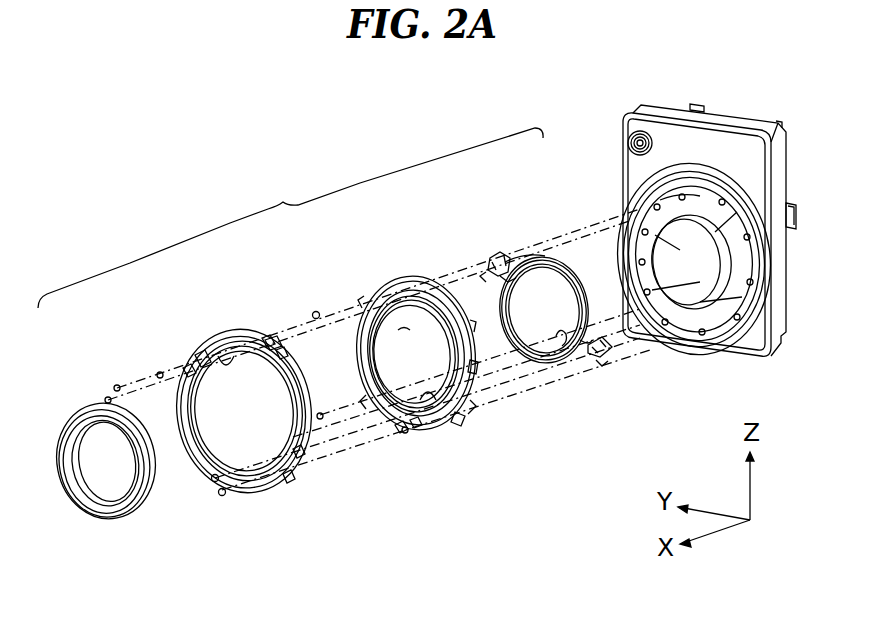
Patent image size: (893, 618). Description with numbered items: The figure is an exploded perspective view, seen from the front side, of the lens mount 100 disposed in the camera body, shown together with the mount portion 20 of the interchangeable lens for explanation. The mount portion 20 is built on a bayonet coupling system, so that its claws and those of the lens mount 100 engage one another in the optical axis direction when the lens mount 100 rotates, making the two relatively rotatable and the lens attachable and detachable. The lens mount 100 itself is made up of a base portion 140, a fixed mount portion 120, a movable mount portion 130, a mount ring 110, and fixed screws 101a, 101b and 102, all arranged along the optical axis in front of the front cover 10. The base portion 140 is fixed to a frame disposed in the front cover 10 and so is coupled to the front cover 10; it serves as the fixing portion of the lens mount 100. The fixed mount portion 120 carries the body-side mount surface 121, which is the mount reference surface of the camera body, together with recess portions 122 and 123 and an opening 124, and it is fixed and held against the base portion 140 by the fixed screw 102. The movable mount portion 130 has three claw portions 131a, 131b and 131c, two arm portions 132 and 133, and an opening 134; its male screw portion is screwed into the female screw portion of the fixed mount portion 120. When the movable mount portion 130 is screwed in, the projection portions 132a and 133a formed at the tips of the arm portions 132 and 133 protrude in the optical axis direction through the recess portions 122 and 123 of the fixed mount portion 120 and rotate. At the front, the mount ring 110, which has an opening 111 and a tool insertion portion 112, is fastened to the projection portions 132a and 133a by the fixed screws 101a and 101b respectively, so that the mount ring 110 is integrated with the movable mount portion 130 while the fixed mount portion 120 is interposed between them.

The front cover 10 is at (624, 162).
The mount portion 20 is at (66, 418).
The lens mount 100 is at (290, 218).
The fixed screw 101a is at (108, 398).
The fixed screw 101b is at (222, 492).
The fixed screw 102 is at (400, 432).
The mount ring 110 is at (197, 357).
The opening 111 is at (212, 357).
The tool insertion portion 112 is at (277, 347).
The fixed mount portion 120 is at (392, 293).
The body-side mount surface 121 is at (457, 420).
The recess portion 122 is at (313, 312).
The recess portion 123 is at (473, 368).
The opening 124 is at (430, 396).
The movable mount portion 130 is at (396, 298).
The claw portion 131a is at (600, 335).
The claw portion 131b is at (535, 360).
The claw portion 131c is at (525, 256).
The arm portion 132 is at (498, 251).
The projection portion 132a is at (490, 274).
The arm portion 133 is at (603, 350).
The projection portion 133a is at (600, 370).
The opening 134 is at (560, 345).
The base portion 140 is at (620, 214).